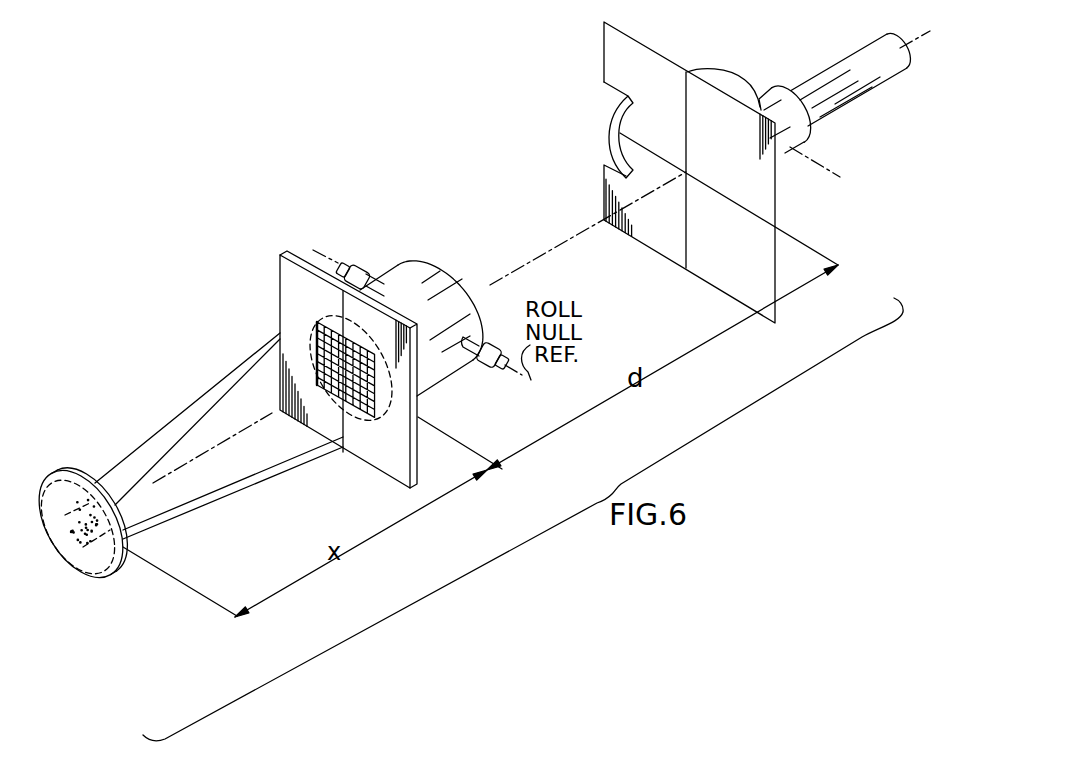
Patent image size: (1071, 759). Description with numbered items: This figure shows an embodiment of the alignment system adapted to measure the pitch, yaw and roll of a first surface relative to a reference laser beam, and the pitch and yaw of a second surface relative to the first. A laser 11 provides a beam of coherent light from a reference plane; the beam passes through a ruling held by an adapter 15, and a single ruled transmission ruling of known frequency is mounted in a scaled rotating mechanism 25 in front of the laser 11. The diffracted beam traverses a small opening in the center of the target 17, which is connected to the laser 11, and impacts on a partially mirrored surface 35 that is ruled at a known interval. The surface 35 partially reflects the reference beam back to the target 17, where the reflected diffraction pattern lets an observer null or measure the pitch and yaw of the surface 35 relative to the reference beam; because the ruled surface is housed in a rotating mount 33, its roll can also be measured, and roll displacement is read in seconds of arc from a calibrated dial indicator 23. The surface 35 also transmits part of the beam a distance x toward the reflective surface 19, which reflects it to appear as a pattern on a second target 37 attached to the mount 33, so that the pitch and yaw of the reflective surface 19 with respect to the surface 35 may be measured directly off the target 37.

The laser 11 is at (840, 102).
The adapter 15 is at (783, 148).
The target 17 is at (727, 277).
The reflective surface 19 is at (103, 565).
The indicator 23 is at (736, 83).
The scaled rotating mechanism 25 is at (610, 136).
The rotating mount 33 is at (432, 387).
The partially mirrored surface 35 is at (323, 397).
The target 37 is at (383, 460).